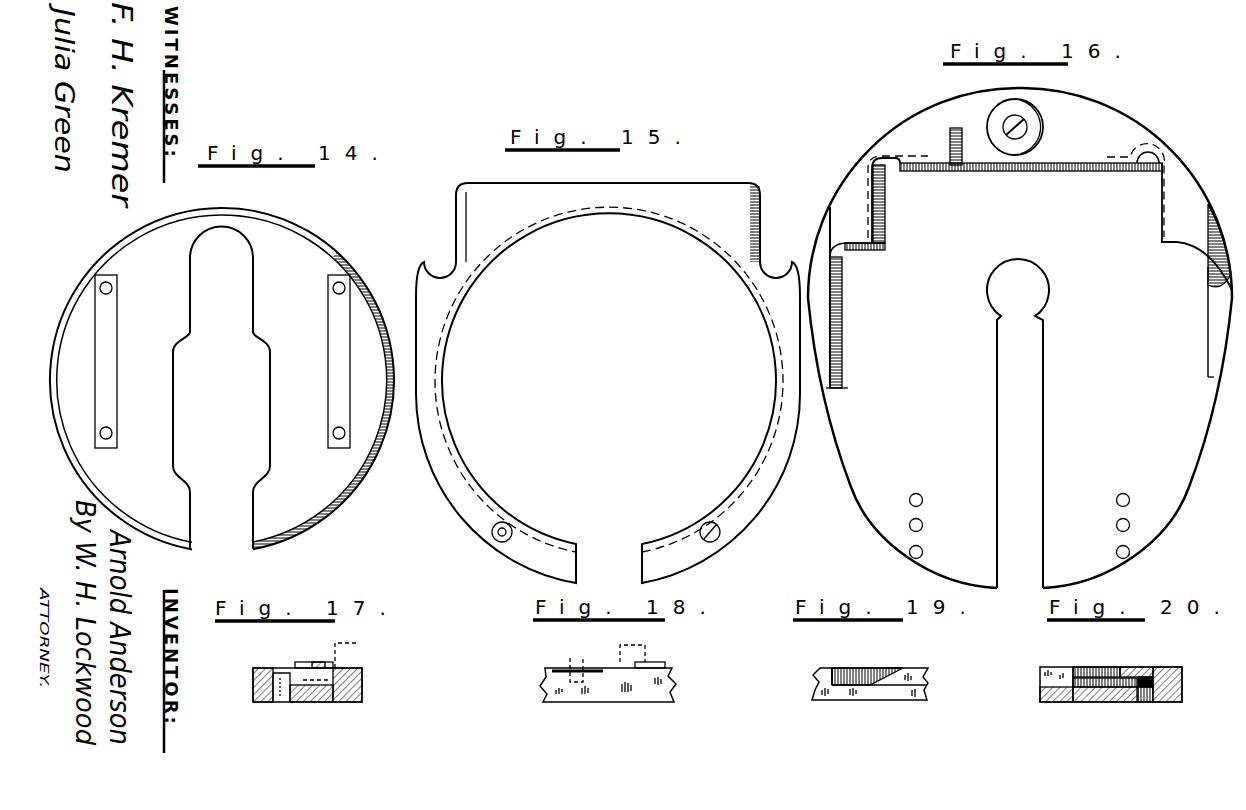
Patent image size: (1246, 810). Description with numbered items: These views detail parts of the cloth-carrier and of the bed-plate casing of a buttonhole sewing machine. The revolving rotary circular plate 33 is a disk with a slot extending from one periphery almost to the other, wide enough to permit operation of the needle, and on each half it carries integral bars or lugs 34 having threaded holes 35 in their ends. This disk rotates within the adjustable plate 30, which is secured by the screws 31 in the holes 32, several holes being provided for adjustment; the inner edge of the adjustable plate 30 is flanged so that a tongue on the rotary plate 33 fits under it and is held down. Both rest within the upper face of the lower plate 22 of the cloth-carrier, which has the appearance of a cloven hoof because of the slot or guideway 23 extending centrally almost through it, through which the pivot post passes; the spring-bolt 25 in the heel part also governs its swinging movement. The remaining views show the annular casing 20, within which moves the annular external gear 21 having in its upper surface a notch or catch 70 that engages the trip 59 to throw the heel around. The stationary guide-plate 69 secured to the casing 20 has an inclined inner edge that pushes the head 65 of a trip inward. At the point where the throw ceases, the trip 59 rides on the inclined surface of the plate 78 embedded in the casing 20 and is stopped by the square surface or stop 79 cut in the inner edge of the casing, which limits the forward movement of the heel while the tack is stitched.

In FIG. 17, the annular casing 20 is at (362, 690).
In FIG. 18, the annular casing 20 is at (602, 692).
In FIG. 19, the annular casing 20 is at (842, 692).
In FIG. 20, the annular casing 20 is at (1167, 667).
In FIG. 20, the annular external gear 21 is at (1098, 687).
In FIG. 16, the lower plate of the cloth-carrier 22 is at (1020, 338).
In FIG. 16, the slot or guideway 23 is at (1043, 452).
In FIG. 16, the spring-bolt 25 is at (1045, 138).
In FIG. 15, the adjustable plate 30 is at (608, 383).
In FIG. 15, the screws 31 is at (716, 529).
In FIG. 16, the holes 32 is at (923, 525).
In FIG. 14, the rotary circular plate 33 is at (222, 378).
In FIG. 14, the bars or lugs 34 is at (104, 391).
In FIG. 14, the threaded holes 35 is at (333, 289).
In FIG. 17, the trip 59 is at (325, 662).
In FIG. 18, the trip 59 is at (578, 667).
In FIG. 19, the trip 59 is at (882, 666).
In FIG. 17, the head of the trip 65 is at (357, 643).
In FIG. 18, the head of the trip 65 is at (645, 648).
In FIG. 17, the stationary guide-plate 69 is at (307, 663).
In FIG. 18, the stationary guide-plate 69 is at (665, 665).
In FIG. 17, the notch or catch 70 is at (302, 703).
In FIG. 19, the plate 78 is at (868, 668).
In FIG. 20, the plate 78 is at (1105, 667).
In FIG. 19, the square surface or stop 79 is at (831, 670).
In FIG. 20, the square surface or stop 79 is at (1050, 668).